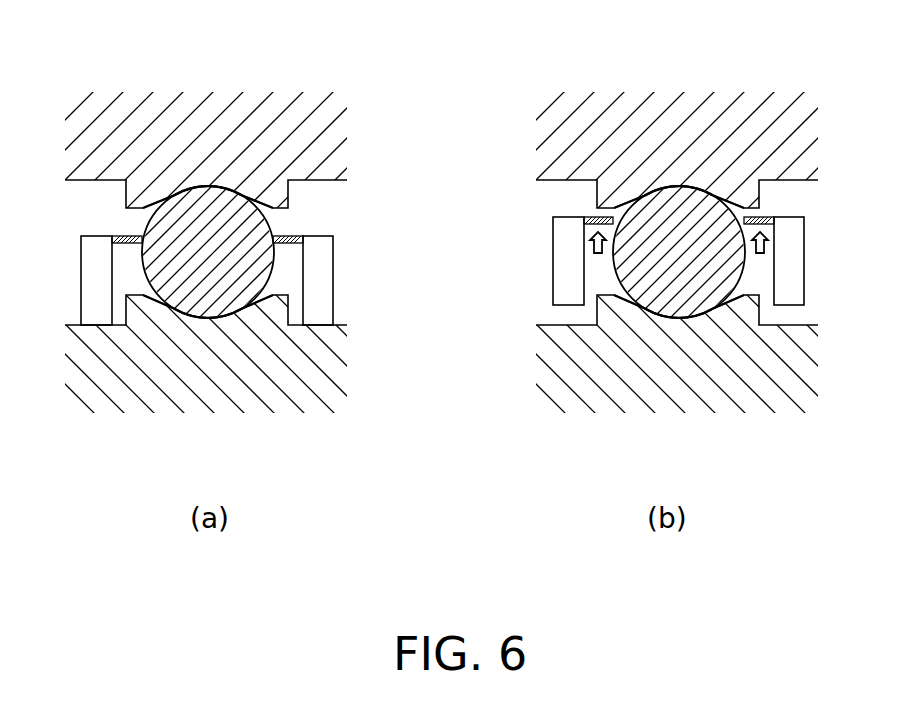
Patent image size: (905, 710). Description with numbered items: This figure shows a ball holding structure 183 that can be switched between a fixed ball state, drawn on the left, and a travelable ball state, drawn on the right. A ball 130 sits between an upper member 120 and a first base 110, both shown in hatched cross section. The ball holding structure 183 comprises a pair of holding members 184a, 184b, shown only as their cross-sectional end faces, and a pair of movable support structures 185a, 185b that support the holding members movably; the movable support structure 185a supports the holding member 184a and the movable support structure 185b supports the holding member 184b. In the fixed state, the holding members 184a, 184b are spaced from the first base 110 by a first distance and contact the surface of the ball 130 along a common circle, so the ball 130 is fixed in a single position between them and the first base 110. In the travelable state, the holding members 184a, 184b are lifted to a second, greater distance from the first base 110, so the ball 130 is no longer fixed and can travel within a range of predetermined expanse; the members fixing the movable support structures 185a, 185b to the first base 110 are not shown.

The first base 110 is at (208, 363).
The movable body 120 is at (206, 148).
The ball 130 is at (178, 228).
The ball holding structure 183 is at (444, 252).
The holding member 184a is at (112, 236).
The holding member 184b is at (291, 235).
The movable support structure 185a is at (93, 288).
The movable support structure 185b is at (318, 290).